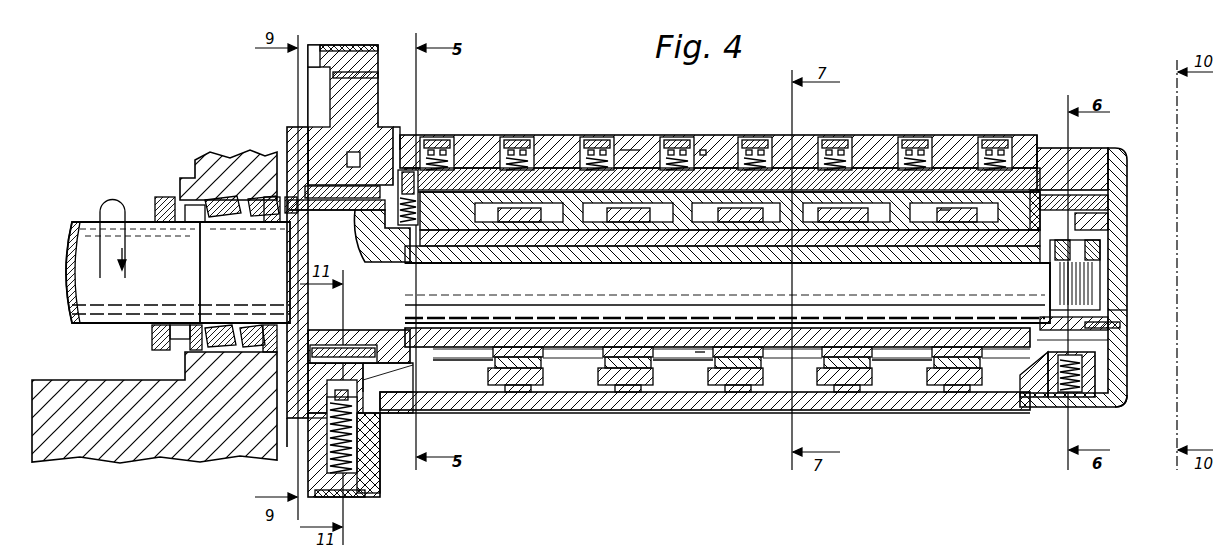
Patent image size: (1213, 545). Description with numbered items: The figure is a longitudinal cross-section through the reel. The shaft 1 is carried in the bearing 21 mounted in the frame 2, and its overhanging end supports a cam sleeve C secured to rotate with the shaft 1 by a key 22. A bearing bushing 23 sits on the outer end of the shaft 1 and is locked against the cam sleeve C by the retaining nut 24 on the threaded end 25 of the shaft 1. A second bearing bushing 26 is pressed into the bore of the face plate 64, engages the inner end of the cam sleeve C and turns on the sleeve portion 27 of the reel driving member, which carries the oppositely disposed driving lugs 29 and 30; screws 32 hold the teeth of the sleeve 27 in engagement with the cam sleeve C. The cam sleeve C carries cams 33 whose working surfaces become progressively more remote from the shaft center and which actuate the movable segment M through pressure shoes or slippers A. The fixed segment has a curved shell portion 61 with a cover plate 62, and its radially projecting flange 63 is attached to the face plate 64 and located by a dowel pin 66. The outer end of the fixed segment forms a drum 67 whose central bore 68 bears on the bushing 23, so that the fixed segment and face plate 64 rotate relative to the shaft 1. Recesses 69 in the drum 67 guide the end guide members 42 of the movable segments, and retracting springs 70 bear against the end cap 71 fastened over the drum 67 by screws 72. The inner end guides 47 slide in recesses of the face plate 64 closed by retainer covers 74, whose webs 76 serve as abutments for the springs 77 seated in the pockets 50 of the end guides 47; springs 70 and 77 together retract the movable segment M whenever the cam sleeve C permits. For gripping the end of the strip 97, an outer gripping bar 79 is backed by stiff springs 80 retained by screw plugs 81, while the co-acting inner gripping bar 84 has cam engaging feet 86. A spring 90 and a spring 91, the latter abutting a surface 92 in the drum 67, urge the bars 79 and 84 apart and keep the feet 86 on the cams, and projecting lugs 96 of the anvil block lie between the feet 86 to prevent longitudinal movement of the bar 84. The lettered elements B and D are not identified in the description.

The shaft 1 is at (1012, 295).
The frame 2 is at (100, 410).
The bearing 21 is at (190, 345).
The key 22 is at (600, 338).
The bearing bushing 23 is at (1100, 317).
The retaining nut 24 is at (1110, 215).
The threaded end 25 is at (1102, 265).
The second bearing bushing 26 is at (360, 330).
The sleeve portion 27 is at (320, 330).
The driving lug 29 is at (292, 127).
The driving lug 30 is at (291, 420).
The screws 32 is at (315, 198).
The cams 33 is at (490, 352).
The end guide members 42 is at (1100, 398).
The inner end guide members 47 is at (380, 435).
The pockets 50 is at (312, 470).
The curved shell portion 61 is at (550, 150).
The cover plate 62 is at (625, 150).
The radially projecting flange 63 is at (380, 100).
The face plate member 64 is at (345, 100).
The dowel pin 66 is at (380, 75).
The drum 67 is at (1128, 165).
The central bore 68 is at (1128, 320).
The recesses 69 is at (1110, 350).
The retracting springs 70 is at (1072, 395).
The end cap 71 is at (1122, 405).
The screws 72 is at (1120, 328).
The retainer covers 74 is at (378, 455).
The axially extending webs 76 is at (365, 497).
The springs 77 is at (378, 470).
The outer gripping bar 79 is at (872, 190).
The springs 80 is at (668, 150).
The screw plugs 81 is at (702, 150).
The inner gripping bar 84 is at (946, 205).
The cam engaging feet 86 is at (476, 228).
The spring 90 is at (406, 172).
The spring 91 is at (1082, 195).
The surface 92 is at (1046, 190).
The projecting lugs 96 is at (520, 222).
The strip 97 is at (480, 188).
The pressure shoe A is at (520, 368).
The serration B is at (345, 46).
The cam sleeve C is at (700, 352).
The element D is at (318, 47).
The movable segment M is at (900, 412).